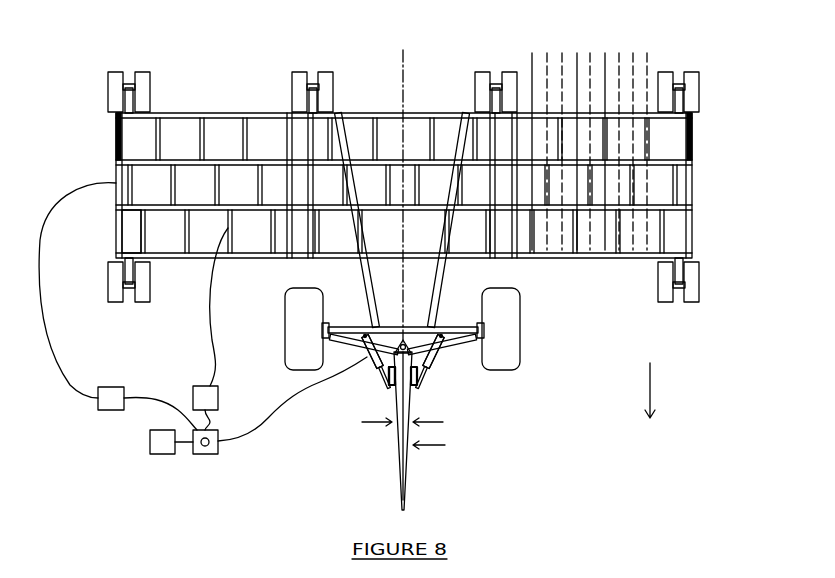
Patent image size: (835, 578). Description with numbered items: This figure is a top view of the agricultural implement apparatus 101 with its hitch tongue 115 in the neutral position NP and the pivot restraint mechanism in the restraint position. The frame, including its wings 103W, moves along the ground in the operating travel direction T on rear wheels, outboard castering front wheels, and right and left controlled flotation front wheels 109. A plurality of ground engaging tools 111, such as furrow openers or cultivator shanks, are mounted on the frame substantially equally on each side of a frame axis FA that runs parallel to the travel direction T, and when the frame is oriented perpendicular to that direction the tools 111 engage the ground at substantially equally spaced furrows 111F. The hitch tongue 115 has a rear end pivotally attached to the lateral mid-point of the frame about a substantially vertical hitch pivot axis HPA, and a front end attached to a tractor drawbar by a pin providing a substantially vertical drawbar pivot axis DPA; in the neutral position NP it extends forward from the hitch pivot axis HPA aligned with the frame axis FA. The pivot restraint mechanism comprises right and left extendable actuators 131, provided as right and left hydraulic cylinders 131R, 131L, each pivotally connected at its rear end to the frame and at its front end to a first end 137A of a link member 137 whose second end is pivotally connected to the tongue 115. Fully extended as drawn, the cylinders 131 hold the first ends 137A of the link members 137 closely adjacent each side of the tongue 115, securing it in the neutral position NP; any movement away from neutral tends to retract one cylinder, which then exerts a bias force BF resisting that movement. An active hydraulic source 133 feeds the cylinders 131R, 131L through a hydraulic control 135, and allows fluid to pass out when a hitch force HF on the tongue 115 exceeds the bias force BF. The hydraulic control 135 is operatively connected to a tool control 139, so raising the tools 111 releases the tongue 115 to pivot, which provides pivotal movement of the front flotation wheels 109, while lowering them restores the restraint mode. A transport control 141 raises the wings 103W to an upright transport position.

The agricultural implement apparatus 101 is at (740, 82).
The wings 103W is at (225, 113).
The ground engaging tools 111 is at (134, 228).
The furrows 111F is at (577, 62).
The frame axis FA is at (405, 80).
The controlled flotation front wheels 109 is at (520, 354).
The hitch tongue 115 is at (400, 474).
The extendable actuators 131 is at (403, 362).
The right hydraulic cylinder 131R is at (383, 367).
The left hydraulic cylinder 131L is at (430, 362).
The link member 137 is at (403, 376).
The first end of link member 137A is at (388, 388).
The hitch pivot axis HPA is at (447, 352).
The bias force BF is at (362, 424).
The hitch force HF is at (444, 446).
The neutral position NP is at (406, 478).
The drawbar pivot axis DPA is at (410, 509).
The operating travel direction T is at (652, 390).
The transport control 141 is at (98, 402).
The tool control 139 is at (195, 386).
The active hydraulic source 133 is at (151, 453).
The hydraulic control 135 is at (206, 455).